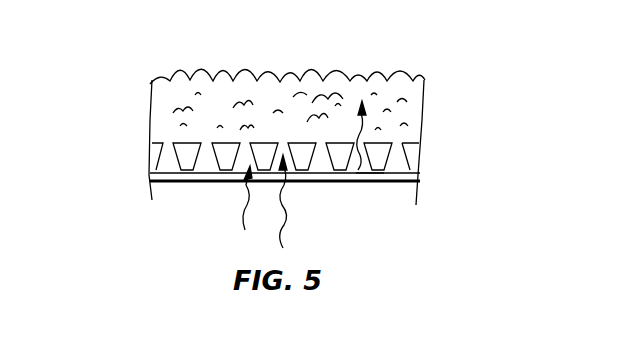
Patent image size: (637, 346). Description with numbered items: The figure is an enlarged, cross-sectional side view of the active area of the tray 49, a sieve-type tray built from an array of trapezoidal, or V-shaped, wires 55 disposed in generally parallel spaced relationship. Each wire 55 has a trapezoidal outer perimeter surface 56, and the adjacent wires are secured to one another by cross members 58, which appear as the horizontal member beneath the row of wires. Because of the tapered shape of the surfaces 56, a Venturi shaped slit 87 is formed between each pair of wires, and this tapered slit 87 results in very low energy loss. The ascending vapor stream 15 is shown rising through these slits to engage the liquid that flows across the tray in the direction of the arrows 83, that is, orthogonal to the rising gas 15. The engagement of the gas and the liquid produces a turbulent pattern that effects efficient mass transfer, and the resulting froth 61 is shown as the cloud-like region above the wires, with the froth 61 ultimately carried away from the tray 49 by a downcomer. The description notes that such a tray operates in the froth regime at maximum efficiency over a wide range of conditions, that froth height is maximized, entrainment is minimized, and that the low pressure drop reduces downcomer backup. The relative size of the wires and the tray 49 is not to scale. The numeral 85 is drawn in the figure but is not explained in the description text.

The ascending vapor stream 15 is at (290, 214).
The tray 49 is at (152, 158).
The V-shaped wires 55 is at (218, 175).
The trapezoidal outer perimeter surface 56 is at (172, 183).
The cross members 58 is at (369, 184).
The froth 61 is at (360, 79).
The arrows 83 is at (198, 101).
The vapor layer boundary 85 is at (183, 143).
The Venturi shaped slit 87 is at (249, 208).